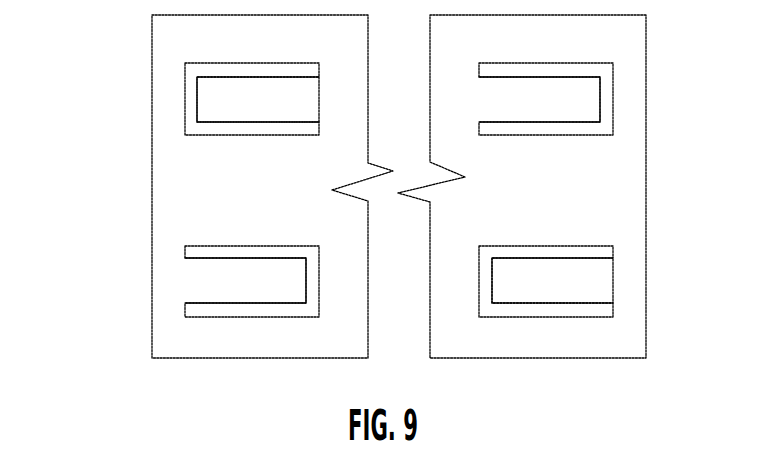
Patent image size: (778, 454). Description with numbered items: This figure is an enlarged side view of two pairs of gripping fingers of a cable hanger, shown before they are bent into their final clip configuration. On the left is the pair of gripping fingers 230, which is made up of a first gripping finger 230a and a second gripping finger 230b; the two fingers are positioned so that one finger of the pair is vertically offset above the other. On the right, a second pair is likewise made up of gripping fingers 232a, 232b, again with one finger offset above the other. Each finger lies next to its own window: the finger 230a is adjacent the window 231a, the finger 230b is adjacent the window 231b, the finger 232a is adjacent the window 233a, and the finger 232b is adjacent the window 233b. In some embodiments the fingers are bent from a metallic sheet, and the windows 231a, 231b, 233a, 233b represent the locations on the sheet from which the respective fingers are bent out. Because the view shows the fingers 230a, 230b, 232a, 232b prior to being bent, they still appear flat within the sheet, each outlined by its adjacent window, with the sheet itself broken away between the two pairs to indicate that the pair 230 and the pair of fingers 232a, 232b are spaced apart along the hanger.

The pair of gripping fingers 230 is at (104, 204).
The gripping finger 230a is at (216, 94).
The gripping finger 230b is at (198, 288).
The window 231a is at (191, 64).
The window 231b is at (193, 250).
The gripping finger 232a is at (577, 99).
The gripping finger 232b is at (670, 185).
The window 233a is at (612, 71).
The window 233b is at (609, 250).